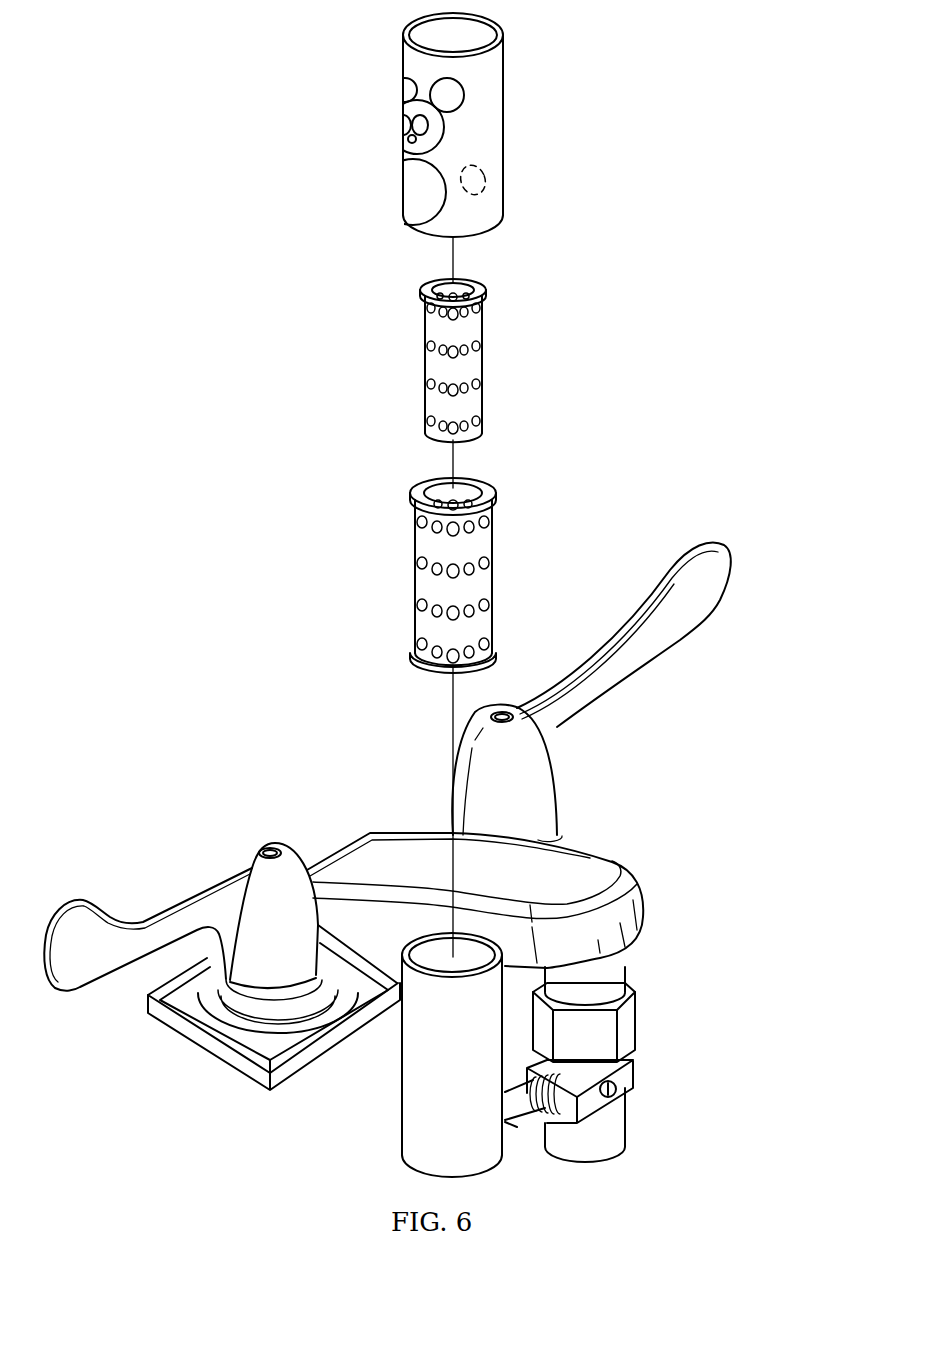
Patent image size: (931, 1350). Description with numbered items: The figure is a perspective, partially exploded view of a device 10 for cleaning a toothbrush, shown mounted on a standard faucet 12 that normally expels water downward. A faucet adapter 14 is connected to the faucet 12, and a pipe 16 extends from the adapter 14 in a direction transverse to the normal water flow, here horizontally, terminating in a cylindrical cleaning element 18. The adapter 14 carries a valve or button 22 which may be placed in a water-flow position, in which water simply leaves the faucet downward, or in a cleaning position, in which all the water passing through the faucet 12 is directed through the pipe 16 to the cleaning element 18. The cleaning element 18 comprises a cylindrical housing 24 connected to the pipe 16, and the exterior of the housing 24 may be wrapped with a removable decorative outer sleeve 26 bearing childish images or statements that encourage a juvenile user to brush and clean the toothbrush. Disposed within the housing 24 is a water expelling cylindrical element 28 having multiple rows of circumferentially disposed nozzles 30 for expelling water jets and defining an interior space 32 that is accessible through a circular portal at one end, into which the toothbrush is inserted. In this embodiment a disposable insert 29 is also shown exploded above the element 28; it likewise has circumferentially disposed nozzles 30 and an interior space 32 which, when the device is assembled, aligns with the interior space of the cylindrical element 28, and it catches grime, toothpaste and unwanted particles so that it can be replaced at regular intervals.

The device for cleaning a toothbrush 10 is at (657, 1073).
The faucet 12 is at (633, 850).
The faucet adapter 14 is at (620, 1023).
The pipe 16 is at (517, 1127).
The cylindrical cleaning element 18 is at (397, 1143).
The valve or button 22 is at (609, 1093).
The cylindrical housing 24 is at (417, 1073).
The removable decorative outer sleeve 26 is at (490, 148).
The water expelling cylindrical element 28 is at (487, 492).
The disposable insert 29 is at (520, 260).
The nozzles 30 is at (425, 383).
The interior space 32 is at (443, 493).